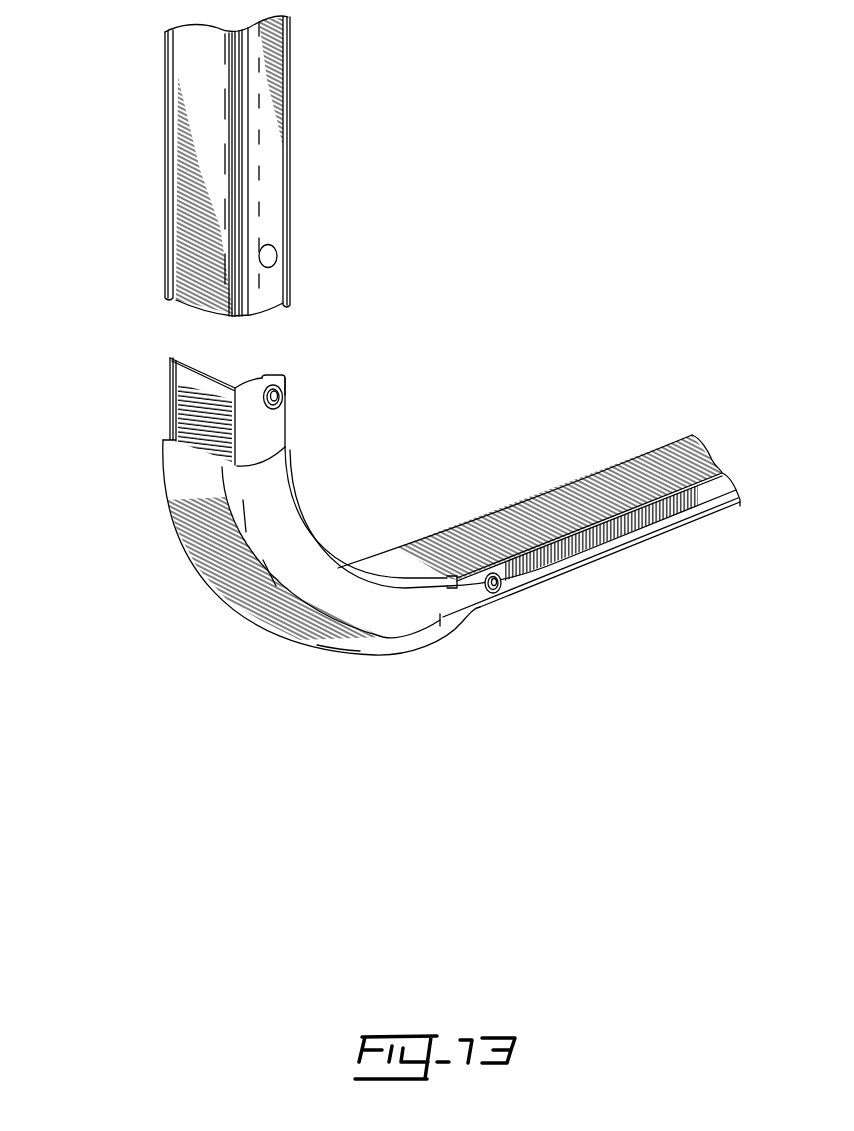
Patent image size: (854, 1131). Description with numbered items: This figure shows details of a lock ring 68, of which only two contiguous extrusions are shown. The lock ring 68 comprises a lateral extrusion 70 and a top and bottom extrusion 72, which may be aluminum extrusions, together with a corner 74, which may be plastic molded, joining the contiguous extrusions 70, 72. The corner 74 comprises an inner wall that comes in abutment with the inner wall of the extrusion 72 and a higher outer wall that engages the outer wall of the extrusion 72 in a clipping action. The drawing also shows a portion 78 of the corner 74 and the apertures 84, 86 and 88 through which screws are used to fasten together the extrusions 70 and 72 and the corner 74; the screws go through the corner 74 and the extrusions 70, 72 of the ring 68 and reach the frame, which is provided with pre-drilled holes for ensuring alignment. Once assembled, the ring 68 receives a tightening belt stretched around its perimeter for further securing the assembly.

The lock ring 68 is at (137, 387).
The lateral extrusion 70 is at (597, 553).
The top and bottom extrusion 72 is at (165, 251).
The corner 74 is at (228, 580).
The tab 78 is at (263, 380).
The aperture 84 is at (283, 395).
The aperture 86 is at (270, 253).
The aperture 88 is at (498, 591).